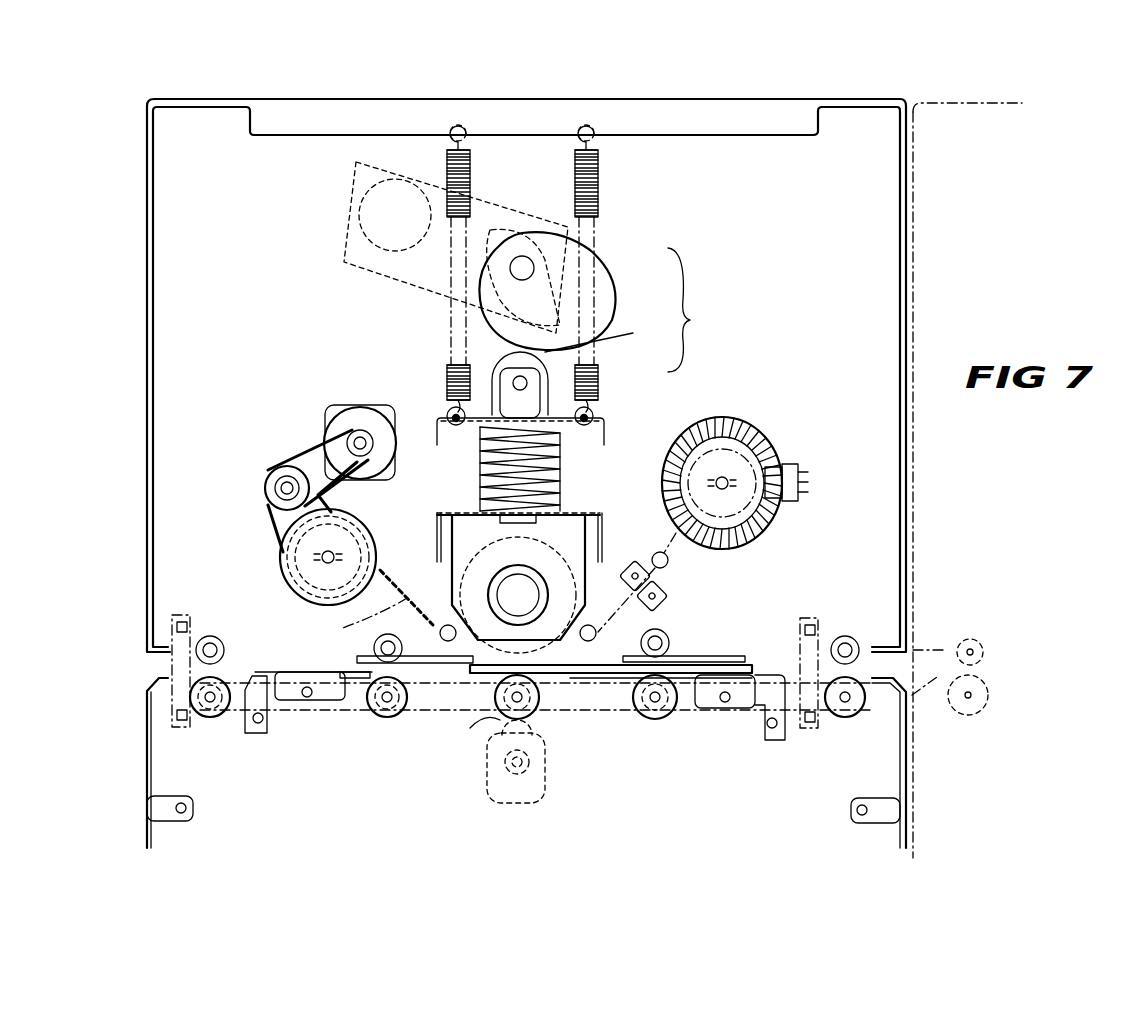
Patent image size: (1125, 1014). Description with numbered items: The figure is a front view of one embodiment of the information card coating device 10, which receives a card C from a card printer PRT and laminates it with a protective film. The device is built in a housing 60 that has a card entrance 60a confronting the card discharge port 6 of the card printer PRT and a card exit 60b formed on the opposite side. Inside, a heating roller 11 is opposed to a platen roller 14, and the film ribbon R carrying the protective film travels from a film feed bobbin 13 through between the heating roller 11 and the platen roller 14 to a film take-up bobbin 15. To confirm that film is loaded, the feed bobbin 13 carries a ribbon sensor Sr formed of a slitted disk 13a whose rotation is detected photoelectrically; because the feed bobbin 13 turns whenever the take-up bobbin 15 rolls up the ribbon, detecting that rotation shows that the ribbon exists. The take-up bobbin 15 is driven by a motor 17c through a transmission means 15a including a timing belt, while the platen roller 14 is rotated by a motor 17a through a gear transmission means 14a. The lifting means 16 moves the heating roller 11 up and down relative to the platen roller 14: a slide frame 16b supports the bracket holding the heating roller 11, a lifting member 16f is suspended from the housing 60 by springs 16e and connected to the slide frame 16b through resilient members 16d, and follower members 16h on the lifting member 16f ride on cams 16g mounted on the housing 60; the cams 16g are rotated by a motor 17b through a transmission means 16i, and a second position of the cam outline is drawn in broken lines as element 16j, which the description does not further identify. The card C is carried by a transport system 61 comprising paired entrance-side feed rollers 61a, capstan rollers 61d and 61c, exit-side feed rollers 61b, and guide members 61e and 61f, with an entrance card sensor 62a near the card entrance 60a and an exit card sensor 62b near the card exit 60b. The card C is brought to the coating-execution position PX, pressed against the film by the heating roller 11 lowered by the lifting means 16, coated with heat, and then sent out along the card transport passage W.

The coating device 10 is at (702, 95).
The housing 60 is at (858, 100).
The card printer PRT is at (962, 103).
The card entrance 60a is at (888, 658).
The card exit 60b is at (152, 645).
The card discharge port 6 is at (925, 650).
The springs 16e is at (598, 188).
The transmission means 16i is at (432, 297).
The motor 17b is at (352, 220).
The cam alternate position 16j is at (508, 220).
The cams 16g is at (604, 300).
The follower members 16h is at (611, 330).
The lifting member 16f is at (612, 422).
The lifting means 16 is at (694, 310).
The resilient members 16d is at (482, 478).
The slide frame 16b is at (440, 522).
The heating roller 11 is at (557, 552).
The film feed bobbin 13 is at (760, 446).
The disk 13a is at (725, 418).
The ribbon sensor Sr is at (797, 470).
The motor 17c is at (357, 415).
The transmission means 15a is at (266, 488).
The film take-up bobbin 15 is at (283, 578).
The film ribbon R is at (377, 611).
The card C is at (716, 658).
The card transport passage W is at (318, 648).
The coating-execution position PX is at (486, 692).
The platen roller 14 is at (535, 710).
The transmission means 14a is at (488, 732).
The motor 17a is at (545, 748).
The capstan roller 61d is at (200, 716).
The guide member 61f is at (222, 720).
The capstan roller 61c is at (387, 718).
The exit-side feed rollers 61b is at (655, 720).
The guide member 61e is at (690, 710).
The entrance-side feed rollers 61a is at (845, 718).
The transport system 61 is at (727, 843).
The exit card sensor 62b is at (205, 762).
The entrance card sensor 62a is at (820, 630).